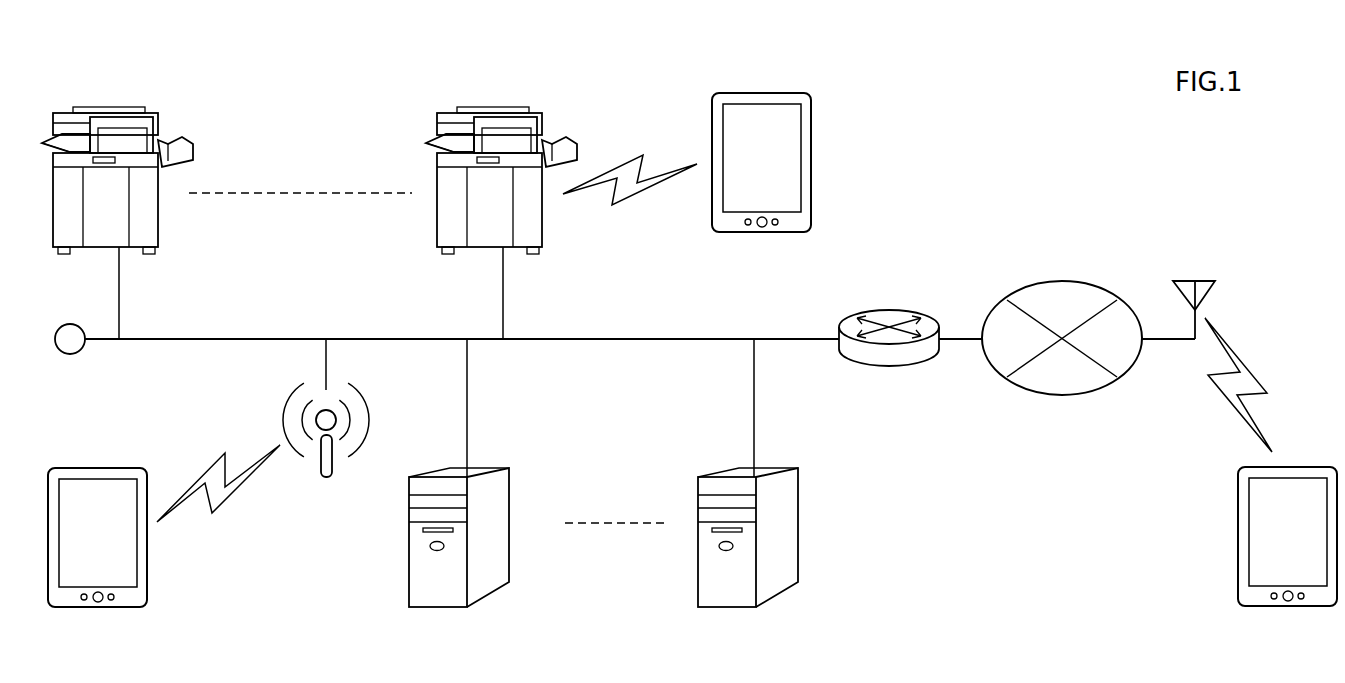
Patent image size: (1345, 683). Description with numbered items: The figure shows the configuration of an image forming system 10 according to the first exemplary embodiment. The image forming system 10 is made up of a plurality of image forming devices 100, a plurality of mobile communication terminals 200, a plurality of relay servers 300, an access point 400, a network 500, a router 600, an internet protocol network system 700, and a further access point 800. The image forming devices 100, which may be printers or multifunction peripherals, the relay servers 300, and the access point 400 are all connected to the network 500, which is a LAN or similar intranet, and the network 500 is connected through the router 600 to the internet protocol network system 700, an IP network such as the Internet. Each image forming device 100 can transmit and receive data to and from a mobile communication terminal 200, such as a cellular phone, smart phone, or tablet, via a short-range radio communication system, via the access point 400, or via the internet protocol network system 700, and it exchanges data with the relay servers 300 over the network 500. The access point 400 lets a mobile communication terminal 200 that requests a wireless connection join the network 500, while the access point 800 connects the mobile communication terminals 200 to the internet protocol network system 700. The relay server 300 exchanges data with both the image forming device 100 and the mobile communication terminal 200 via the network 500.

The image forming system 10 is at (707, 672).
The image forming device 100 is at (105, 106).
The mobile communication terminal 200 is at (778, 92).
The relay server 300 is at (488, 466).
The access point 400 is at (360, 398).
The network 500 is at (712, 329).
The router 600 is at (893, 313).
The internet protocol network system 700 is at (1066, 282).
The access point 800 is at (1205, 280).